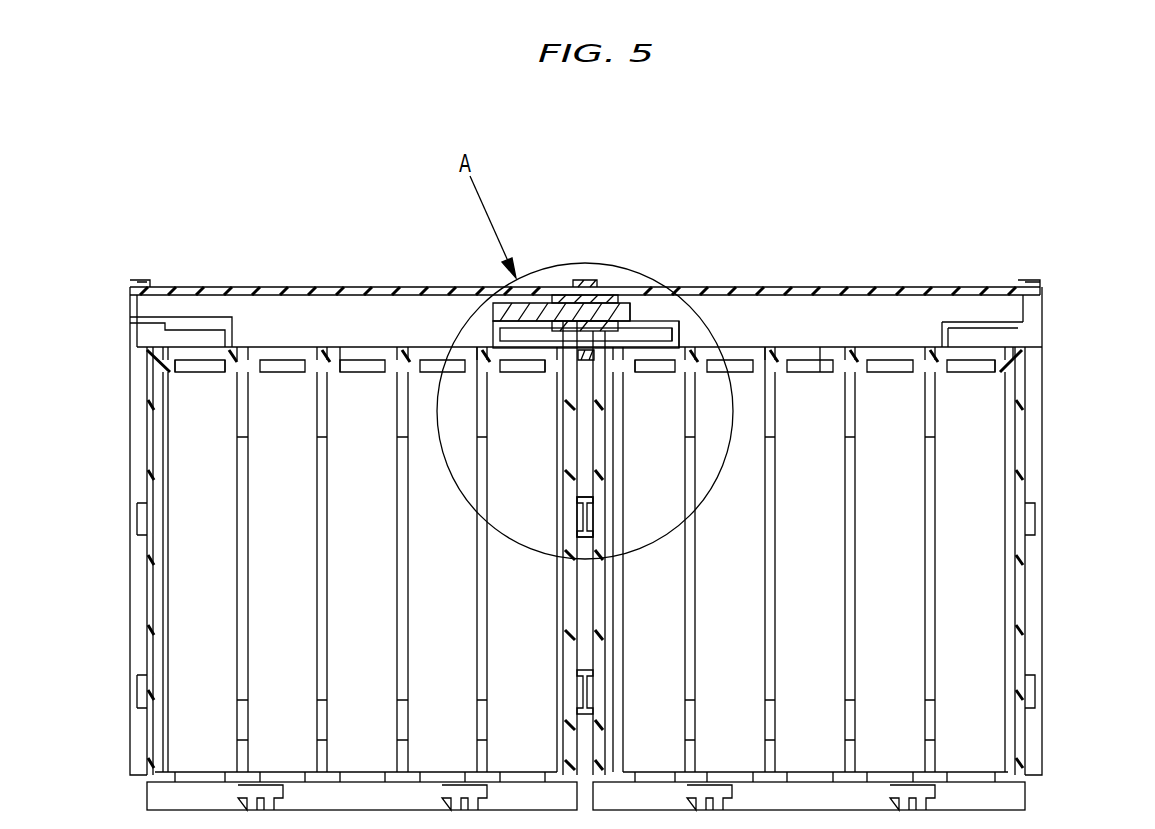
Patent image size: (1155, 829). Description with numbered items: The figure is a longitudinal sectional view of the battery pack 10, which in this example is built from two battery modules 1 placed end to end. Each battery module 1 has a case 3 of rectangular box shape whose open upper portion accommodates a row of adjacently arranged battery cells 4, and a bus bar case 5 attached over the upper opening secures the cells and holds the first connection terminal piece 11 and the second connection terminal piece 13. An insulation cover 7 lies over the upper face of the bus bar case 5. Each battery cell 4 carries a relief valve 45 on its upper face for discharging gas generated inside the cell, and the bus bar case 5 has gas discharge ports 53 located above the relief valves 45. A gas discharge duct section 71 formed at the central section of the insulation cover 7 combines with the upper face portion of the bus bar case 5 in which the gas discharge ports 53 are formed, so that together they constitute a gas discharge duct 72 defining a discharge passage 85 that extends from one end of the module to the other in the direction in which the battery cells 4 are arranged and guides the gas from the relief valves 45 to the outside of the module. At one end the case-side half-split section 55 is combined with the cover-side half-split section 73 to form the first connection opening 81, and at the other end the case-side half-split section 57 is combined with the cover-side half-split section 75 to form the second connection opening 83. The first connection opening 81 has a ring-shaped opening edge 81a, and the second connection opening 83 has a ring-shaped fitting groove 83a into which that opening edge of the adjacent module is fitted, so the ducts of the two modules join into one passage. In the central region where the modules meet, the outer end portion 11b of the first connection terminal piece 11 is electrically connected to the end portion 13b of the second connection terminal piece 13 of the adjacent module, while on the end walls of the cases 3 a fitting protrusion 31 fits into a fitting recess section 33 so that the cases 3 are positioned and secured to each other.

The battery module 1 is at (418, 222).
The case 3 is at (145, 456).
The battery cell 4 is at (430, 612).
The bus bar case 5 is at (483, 338).
The insulation cover 7 is at (172, 282).
The battery pack 10 is at (1048, 250).
The first connection terminal piece 11 is at (655, 318).
The outer end portion 11b is at (636, 300).
The second connection terminal piece 13 is at (553, 296).
The outer end portion 13b is at (578, 282).
The fitting protrusion 31 is at (577, 520).
The fitting recess section 33 is at (598, 490).
The relief valve 45 is at (432, 350).
The gas discharge port 53 is at (282, 347).
The case-side half-split section 55 is at (1048, 346).
The case-side half-split section 57 is at (125, 350).
The gas discharge duct section 71 is at (340, 345).
The gas discharge duct 72 is at (219, 282).
The cover-side half-split section 73 is at (1048, 283).
The cover-side half-split section 75 is at (140, 282).
The first connection opening 81 is at (572, 415).
The ring-shaped opening edge 81a is at (612, 302).
The second connection opening 83 is at (135, 197).
The ring-shaped fitting groove 83a is at (582, 370).
The discharge passage 85 is at (333, 334).